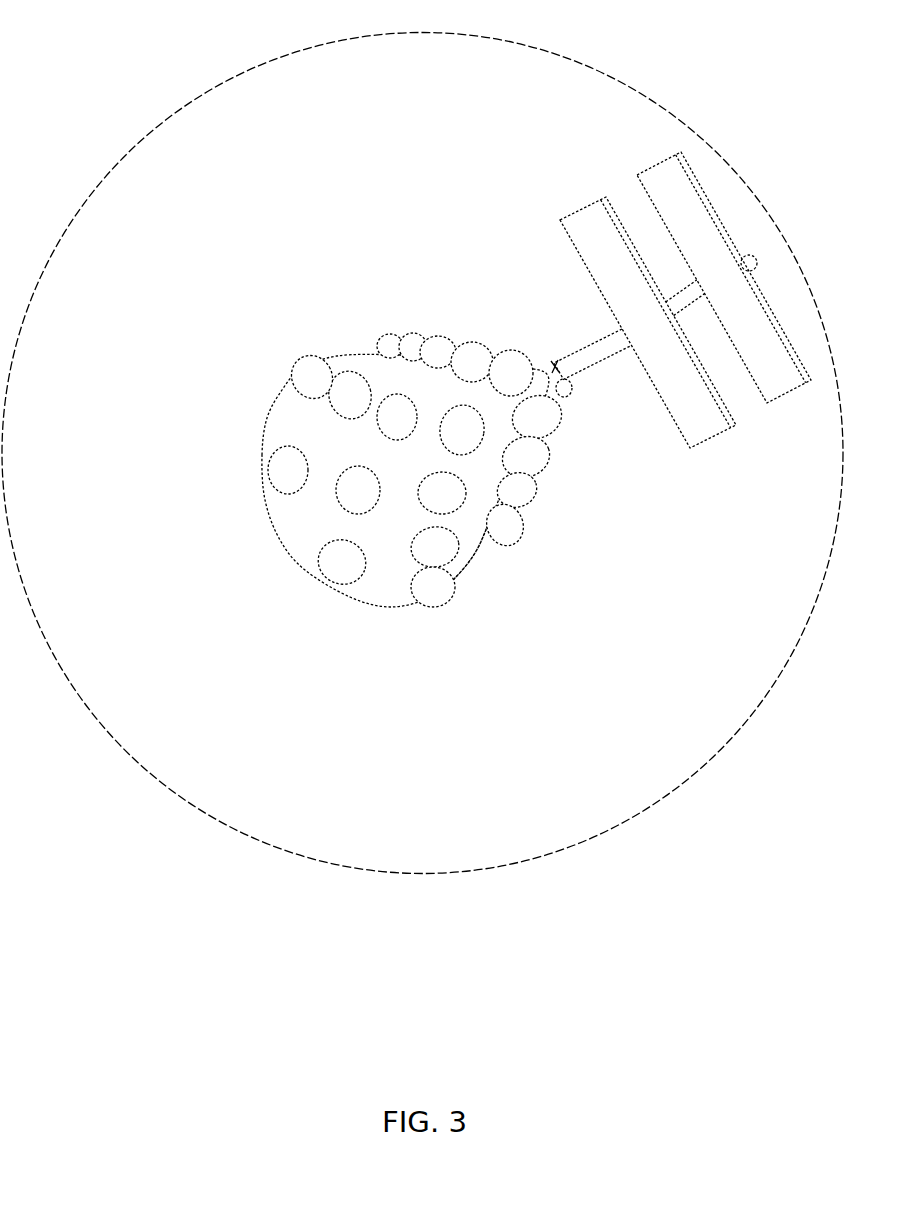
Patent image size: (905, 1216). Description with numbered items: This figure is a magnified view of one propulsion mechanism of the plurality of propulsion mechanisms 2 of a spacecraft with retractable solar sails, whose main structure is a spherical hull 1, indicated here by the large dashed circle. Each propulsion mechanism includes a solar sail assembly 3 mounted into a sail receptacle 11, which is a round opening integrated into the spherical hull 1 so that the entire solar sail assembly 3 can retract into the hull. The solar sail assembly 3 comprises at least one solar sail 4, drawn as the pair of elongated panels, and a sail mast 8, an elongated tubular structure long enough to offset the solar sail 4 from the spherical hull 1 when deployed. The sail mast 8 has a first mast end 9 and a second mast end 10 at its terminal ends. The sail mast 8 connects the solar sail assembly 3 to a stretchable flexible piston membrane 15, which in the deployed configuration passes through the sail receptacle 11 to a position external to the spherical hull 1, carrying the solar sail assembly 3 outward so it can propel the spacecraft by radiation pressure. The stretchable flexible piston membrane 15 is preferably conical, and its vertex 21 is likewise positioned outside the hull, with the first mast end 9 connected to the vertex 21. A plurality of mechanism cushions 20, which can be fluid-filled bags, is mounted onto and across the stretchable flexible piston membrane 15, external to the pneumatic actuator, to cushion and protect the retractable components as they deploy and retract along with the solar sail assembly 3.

The spherical hull 1 is at (231, 95).
The plurality of propulsion mechanisms 2 is at (515, 384).
The solar sail assembly 3 is at (435, 222).
The solar sail 4 is at (703, 435).
The sail mast 8 is at (585, 358).
The first mast end 9 is at (556, 368).
The second mast end 10 is at (757, 262).
The sail receptacle 11 is at (263, 441).
The stretchable flexible piston membrane 15 is at (466, 562).
The plurality of mechanism cushions 20 is at (388, 342).
The vertex 21 is at (562, 393).